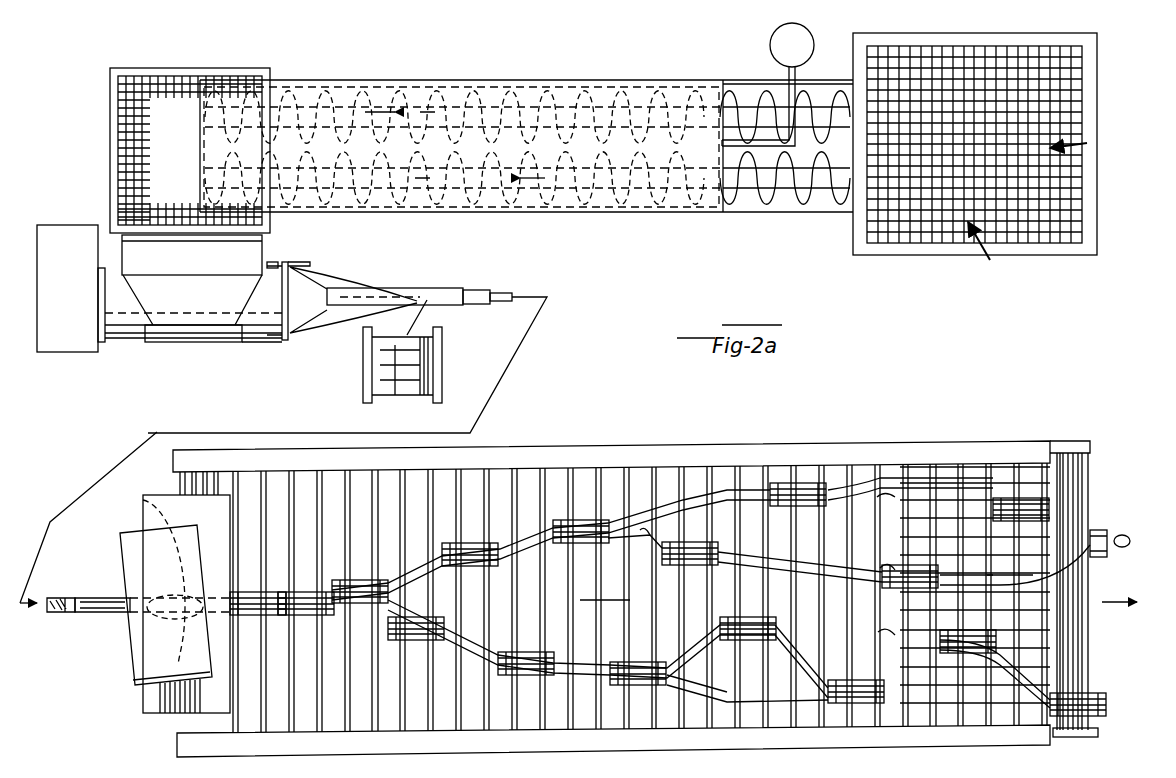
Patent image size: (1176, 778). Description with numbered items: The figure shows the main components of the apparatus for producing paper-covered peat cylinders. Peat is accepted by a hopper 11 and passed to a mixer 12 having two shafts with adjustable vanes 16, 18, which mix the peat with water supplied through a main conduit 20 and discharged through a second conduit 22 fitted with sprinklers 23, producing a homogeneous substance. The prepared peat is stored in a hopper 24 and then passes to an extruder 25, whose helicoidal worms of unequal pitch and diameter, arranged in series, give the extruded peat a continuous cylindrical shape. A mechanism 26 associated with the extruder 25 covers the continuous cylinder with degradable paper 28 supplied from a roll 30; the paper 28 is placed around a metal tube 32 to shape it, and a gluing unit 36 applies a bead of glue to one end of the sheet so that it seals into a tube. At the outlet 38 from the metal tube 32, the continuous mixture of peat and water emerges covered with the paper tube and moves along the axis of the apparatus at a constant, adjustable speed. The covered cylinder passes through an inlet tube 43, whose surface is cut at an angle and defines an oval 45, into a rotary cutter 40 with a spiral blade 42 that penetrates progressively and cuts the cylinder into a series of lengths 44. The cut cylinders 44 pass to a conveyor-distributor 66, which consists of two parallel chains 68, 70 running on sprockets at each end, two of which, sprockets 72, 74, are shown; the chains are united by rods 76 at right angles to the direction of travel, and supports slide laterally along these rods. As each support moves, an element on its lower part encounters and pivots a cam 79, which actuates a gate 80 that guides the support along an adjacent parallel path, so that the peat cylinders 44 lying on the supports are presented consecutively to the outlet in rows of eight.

The hopper 11 is at (854, 228).
The mixer 12 is at (503, 78).
The adjustable vane 16 is at (838, 95).
The adjustable vane 18 is at (845, 152).
The main conduit 20 is at (770, 44).
The second conduit 22 is at (730, 142).
The sprinklers 23 is at (443, 212).
The hopper 24 is at (110, 138).
The extruder 25 is at (256, 340).
The mechanism 26 is at (345, 266).
The paper 28 is at (352, 325).
The roll 30 is at (305, 340).
The metal tube 32 is at (483, 290).
The gluing unit 36 is at (447, 367).
The outlet 38 is at (132, 600).
The rotary cutter 40 is at (125, 673).
The spiral blade 42 is at (152, 588).
The inlet tube 43 is at (122, 615).
The lengths 44 is at (580, 520).
The oval 45 is at (143, 500).
The conveyor-distributor 66 is at (722, 445).
The chain 68 is at (985, 441).
The chain 70 is at (180, 745).
The sprocket 72 is at (1097, 450).
The sprocket 74 is at (1098, 732).
The rods 76 is at (522, 468).
The cam 79 is at (650, 535).
The gate 80 is at (640, 530).